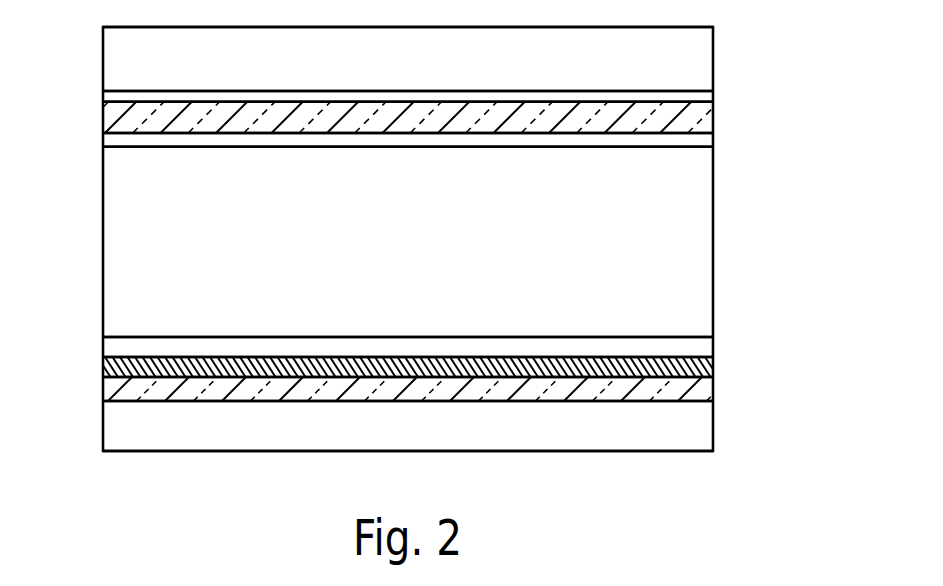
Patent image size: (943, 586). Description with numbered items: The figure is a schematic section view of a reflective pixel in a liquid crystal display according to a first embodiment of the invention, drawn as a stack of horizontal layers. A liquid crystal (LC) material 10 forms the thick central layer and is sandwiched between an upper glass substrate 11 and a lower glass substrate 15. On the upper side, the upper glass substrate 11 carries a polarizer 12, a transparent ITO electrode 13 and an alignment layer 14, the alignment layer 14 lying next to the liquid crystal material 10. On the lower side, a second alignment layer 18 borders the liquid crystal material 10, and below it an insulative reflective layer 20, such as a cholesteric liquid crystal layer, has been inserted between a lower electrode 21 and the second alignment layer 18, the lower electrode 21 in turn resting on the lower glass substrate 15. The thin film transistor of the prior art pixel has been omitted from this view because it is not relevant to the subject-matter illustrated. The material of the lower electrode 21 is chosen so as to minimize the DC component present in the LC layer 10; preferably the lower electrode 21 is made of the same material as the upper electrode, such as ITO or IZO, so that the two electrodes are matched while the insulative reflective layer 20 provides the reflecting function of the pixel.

The liquid crystal material 10 is at (697, 232).
The upper glass substrate 11 is at (702, 60).
The polarizer 12 is at (708, 97).
The transparent ITO electrode 13 is at (712, 115).
The alignment layer 14 is at (708, 142).
The lower glass substrate 15 is at (698, 433).
The second alignment layer 18 is at (708, 345).
The insulative reflective layer 20 is at (707, 367).
The lower electrode 21 is at (708, 390).